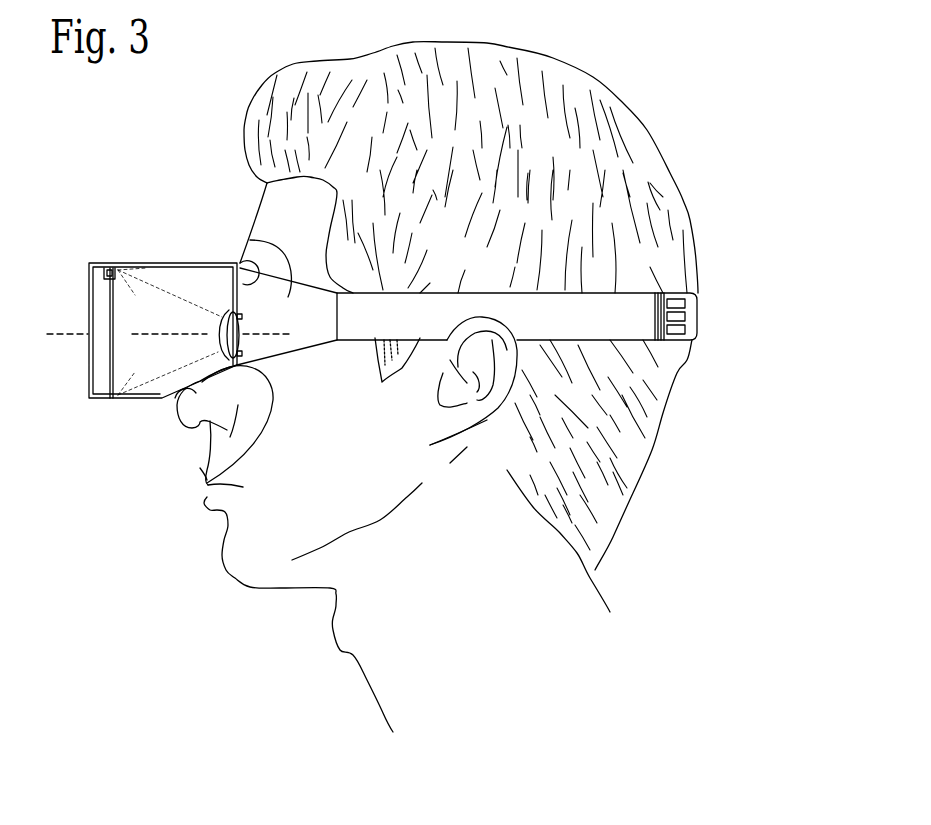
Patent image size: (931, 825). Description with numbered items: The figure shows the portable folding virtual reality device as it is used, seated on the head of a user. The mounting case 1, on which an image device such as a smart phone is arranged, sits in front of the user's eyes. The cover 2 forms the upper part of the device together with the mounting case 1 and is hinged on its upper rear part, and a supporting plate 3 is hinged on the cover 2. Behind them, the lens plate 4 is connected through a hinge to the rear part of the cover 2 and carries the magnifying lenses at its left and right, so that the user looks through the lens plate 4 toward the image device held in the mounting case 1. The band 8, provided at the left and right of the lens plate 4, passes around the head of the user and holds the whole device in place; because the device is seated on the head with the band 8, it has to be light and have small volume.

The mounting case 1 is at (89, 299).
The cover 2 is at (112, 263).
The supporting plate 3 is at (130, 360).
The lens plate 4 is at (250, 240).
The band 8 is at (590, 294).